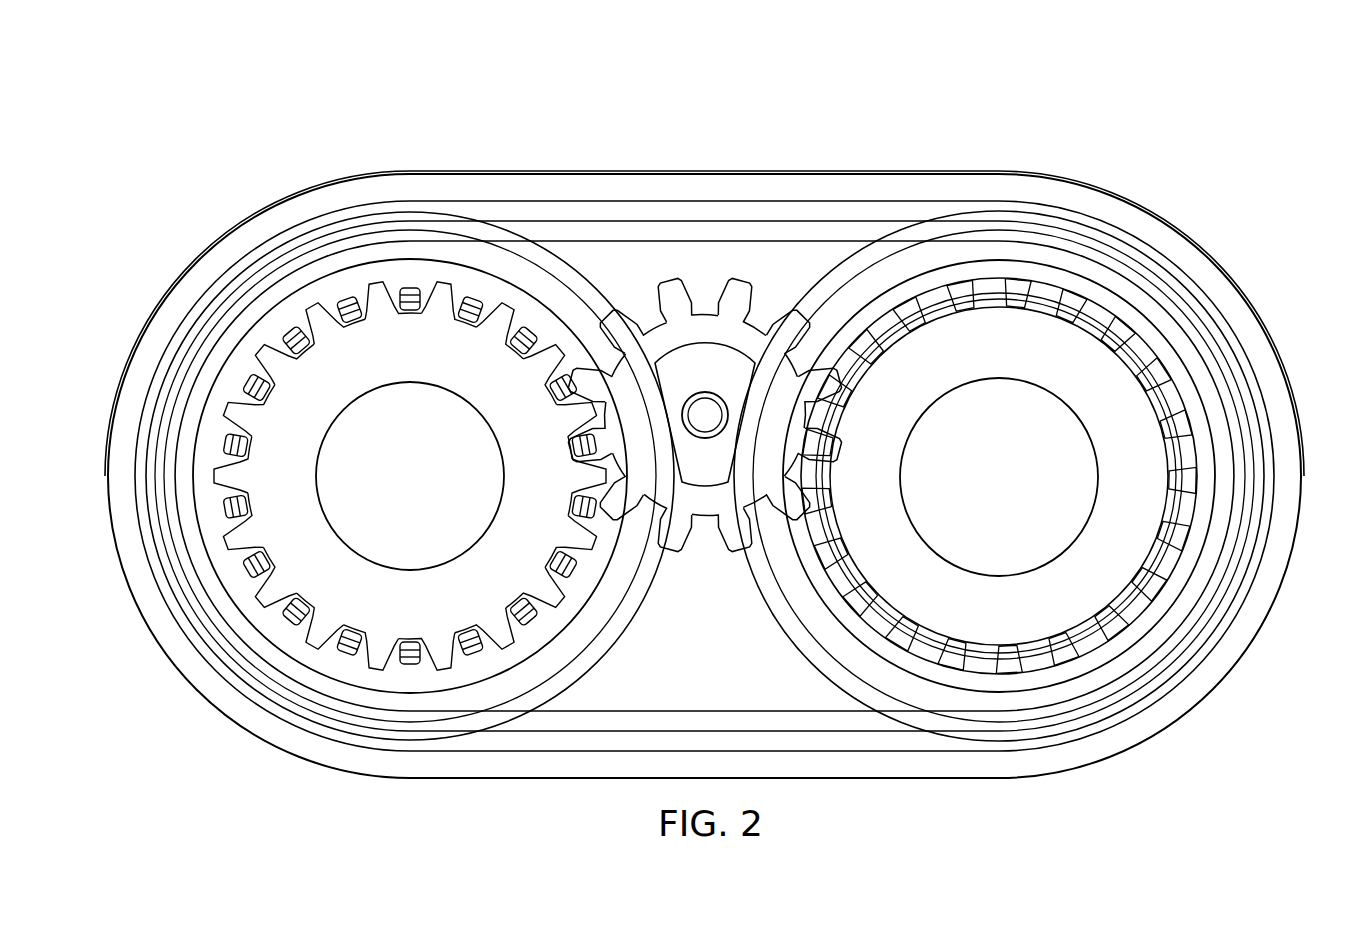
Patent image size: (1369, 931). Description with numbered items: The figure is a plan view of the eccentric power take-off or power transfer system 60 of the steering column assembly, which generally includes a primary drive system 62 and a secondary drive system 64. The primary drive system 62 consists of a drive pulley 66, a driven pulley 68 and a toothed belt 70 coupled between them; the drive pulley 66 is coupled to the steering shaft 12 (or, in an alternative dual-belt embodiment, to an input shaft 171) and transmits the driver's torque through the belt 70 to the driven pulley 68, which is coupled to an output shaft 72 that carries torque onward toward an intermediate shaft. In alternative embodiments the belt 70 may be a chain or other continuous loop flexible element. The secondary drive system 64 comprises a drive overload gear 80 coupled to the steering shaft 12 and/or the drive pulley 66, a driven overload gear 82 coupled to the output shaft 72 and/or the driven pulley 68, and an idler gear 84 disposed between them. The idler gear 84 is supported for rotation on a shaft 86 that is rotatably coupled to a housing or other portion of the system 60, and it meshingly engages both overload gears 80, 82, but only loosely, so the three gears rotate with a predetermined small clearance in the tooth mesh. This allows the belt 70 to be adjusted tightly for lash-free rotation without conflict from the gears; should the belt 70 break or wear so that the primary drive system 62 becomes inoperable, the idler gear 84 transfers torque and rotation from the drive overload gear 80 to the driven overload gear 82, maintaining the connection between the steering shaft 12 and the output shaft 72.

The power transfer system 60 is at (1188, 106).
The primary drive system 62 is at (1015, 170).
The secondary drive system 64 is at (770, 286).
The drive pulley 66 is at (283, 287).
The driven pulley 68 is at (1188, 350).
The toothed belt 70 is at (1297, 461).
The output shaft 72 is at (968, 570).
The drive overload gear 80 is at (268, 452).
The driven overload gear 82 is at (1092, 303).
The idler gear 84 is at (705, 352).
The shaft 86 is at (705, 425).
The steering shaft 12 is at (410, 501).
The input shaft 171 is at (413, 557).